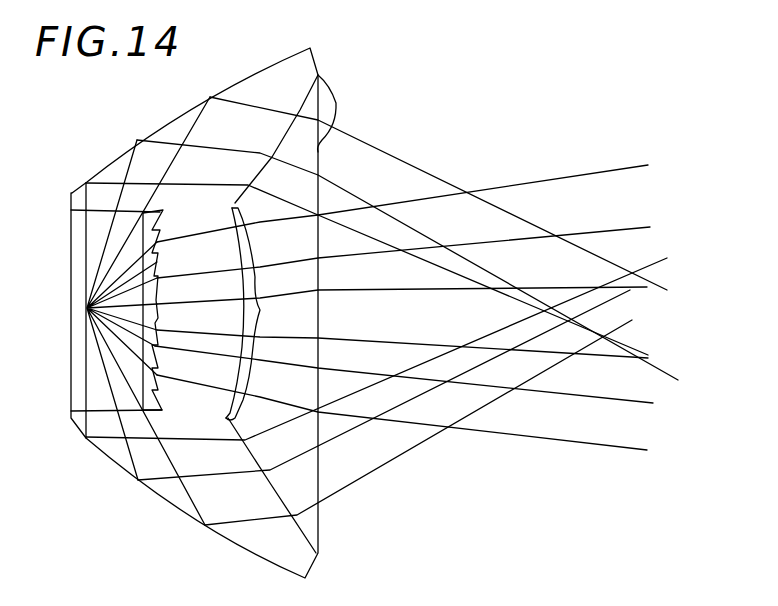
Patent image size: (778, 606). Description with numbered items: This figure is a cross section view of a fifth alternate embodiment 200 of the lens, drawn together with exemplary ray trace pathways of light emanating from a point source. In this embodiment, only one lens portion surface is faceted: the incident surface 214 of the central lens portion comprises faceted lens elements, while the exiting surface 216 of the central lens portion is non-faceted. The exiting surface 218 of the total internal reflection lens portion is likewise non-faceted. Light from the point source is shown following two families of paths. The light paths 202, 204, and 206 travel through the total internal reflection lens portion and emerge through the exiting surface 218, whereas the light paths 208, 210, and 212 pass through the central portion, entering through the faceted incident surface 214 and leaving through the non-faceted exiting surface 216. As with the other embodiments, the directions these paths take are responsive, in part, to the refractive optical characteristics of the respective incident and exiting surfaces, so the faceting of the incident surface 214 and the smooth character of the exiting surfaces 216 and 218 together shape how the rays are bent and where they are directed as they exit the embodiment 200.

The fifth alternate embodiment 200 is at (352, 77).
The light path 202 is at (109, 182).
The light path 204 is at (237, 153).
The light path 206 is at (247, 100).
The light path 208 is at (360, 322).
The light path 210 is at (352, 352).
The light path 212 is at (330, 410).
The incident surface of the central lens portion 214 is at (143, 383).
The exiting surface of the central lens portion 216 is at (256, 312).
The exiting surface of the total internal reflection lens portion 218 is at (236, 207).